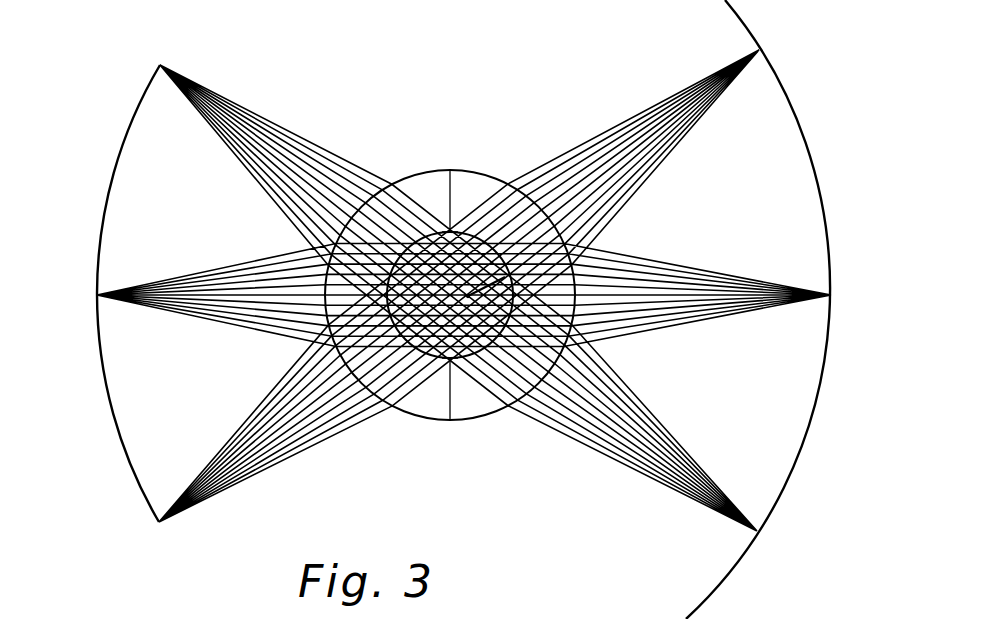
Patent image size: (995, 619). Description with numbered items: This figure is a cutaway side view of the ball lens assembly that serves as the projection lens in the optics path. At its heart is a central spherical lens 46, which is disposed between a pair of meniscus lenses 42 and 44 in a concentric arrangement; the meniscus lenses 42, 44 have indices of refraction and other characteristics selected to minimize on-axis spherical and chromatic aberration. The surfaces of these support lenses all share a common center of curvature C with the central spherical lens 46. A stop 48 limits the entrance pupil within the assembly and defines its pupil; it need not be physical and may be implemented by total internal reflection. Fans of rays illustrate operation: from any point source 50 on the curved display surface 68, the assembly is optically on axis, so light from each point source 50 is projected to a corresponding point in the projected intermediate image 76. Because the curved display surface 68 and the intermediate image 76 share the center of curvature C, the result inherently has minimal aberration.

The meniscus lens 42 is at (503, 187).
The meniscus lens 44 is at (437, 168).
The central spherical lens 46 is at (460, 362).
The stop 48 is at (437, 231).
The point source 50 is at (157, 64).
The curved display surface 68 is at (124, 430).
The projected intermediate image 76 is at (760, 528).
The center of curvature C is at (505, 277).